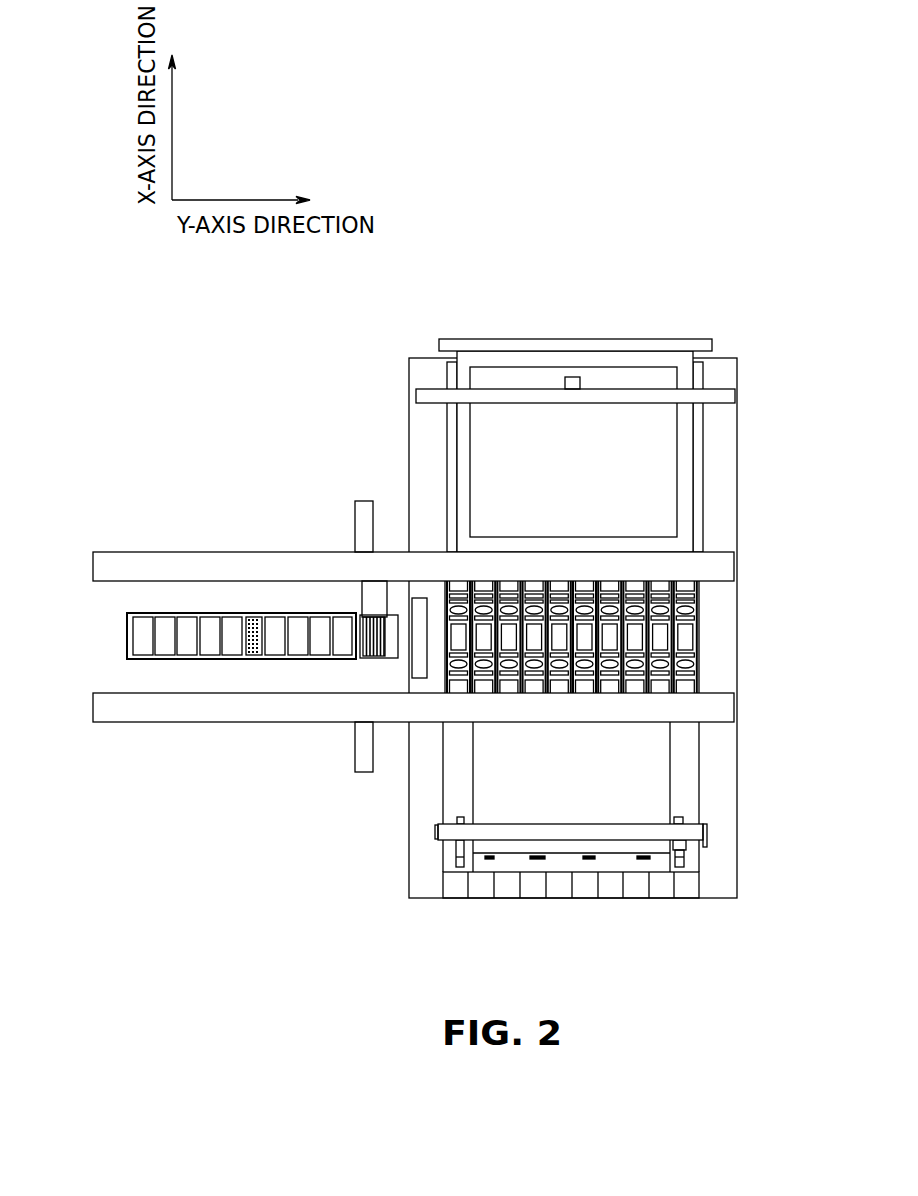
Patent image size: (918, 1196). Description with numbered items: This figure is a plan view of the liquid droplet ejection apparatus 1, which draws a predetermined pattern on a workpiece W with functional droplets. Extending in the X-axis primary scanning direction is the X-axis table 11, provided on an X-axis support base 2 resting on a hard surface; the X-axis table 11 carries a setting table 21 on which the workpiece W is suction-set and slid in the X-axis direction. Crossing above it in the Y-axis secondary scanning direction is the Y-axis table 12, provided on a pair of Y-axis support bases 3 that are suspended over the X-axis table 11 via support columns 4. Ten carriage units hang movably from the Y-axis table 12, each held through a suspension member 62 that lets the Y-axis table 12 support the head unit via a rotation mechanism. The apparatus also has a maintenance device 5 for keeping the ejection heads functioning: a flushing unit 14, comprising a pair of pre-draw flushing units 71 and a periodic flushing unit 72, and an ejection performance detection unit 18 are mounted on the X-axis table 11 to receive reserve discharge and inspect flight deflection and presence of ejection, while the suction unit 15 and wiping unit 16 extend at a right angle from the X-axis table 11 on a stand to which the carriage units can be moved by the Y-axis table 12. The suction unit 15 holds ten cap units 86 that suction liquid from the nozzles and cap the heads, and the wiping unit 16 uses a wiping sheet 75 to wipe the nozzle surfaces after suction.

The liquid droplet ejection apparatus 1 is at (721, 224).
The X-axis support base 2 is at (430, 888).
The Y-axis support bases 3 is at (93, 573).
The support columns 4 is at (365, 512).
The maintenance device 5 is at (224, 585).
The X-axis table 11 is at (572, 305).
The Y-axis table 12 is at (762, 634).
The flushing unit 14 is at (350, 343).
The suction unit 15 is at (116, 637).
The wiping unit 16 is at (378, 670).
The ejection performance detection unit 18 is at (421, 836).
The setting table 21 is at (683, 492).
The suspension member 62 is at (610, 637).
The pre-draw flushing units 71 is at (450, 345).
The periodic flushing unit 72 is at (690, 890).
The wiping sheet 75 is at (362, 656).
The cap units 86 is at (235, 648).
The workpiece W is at (488, 380).